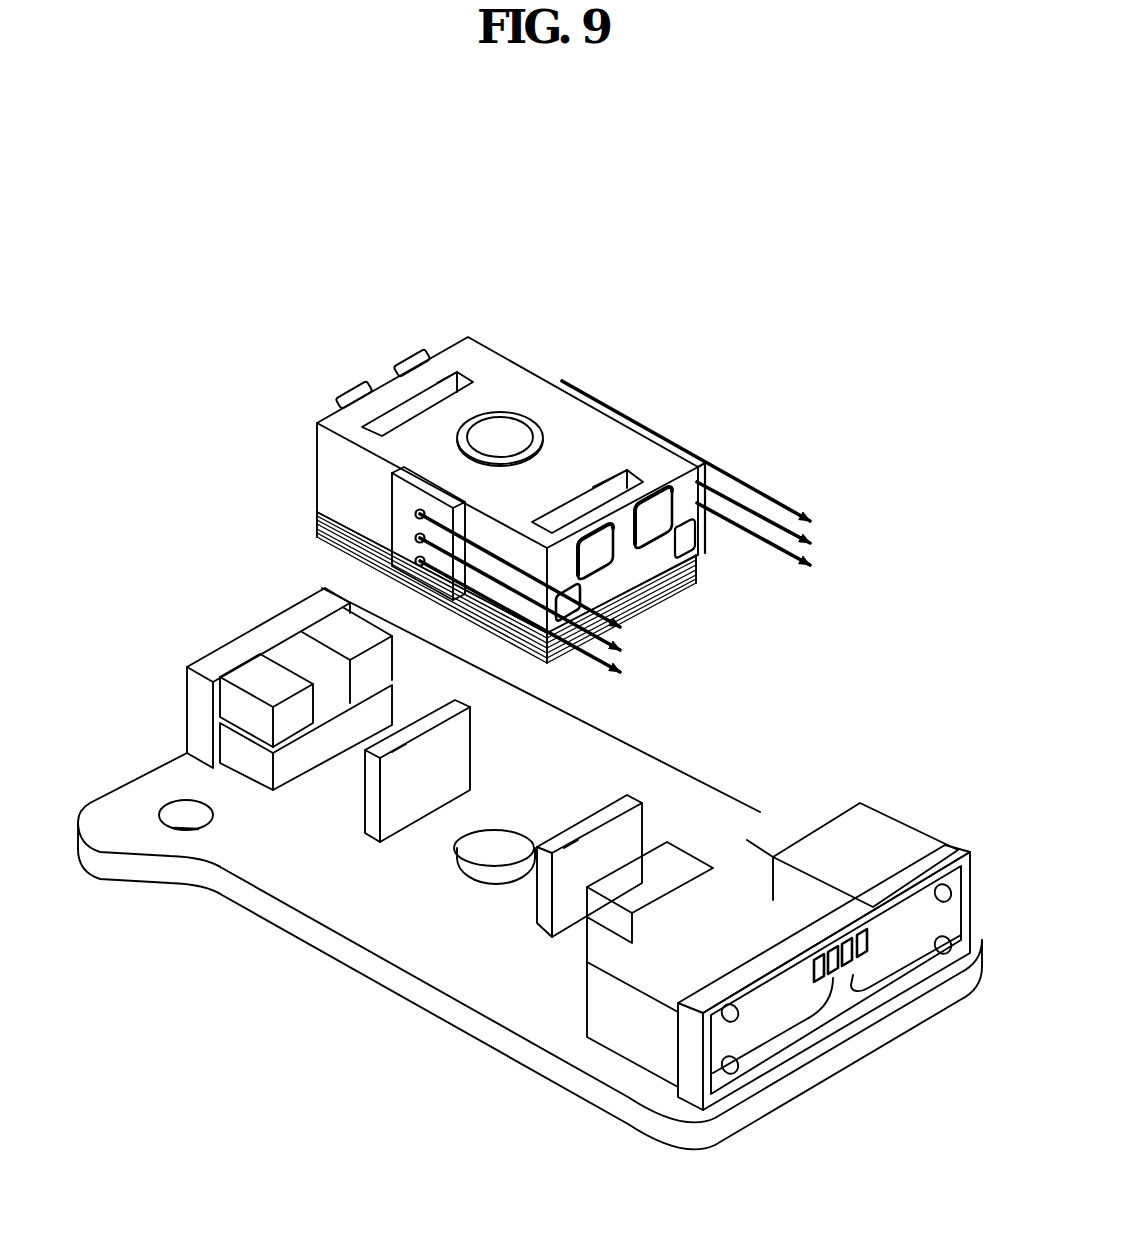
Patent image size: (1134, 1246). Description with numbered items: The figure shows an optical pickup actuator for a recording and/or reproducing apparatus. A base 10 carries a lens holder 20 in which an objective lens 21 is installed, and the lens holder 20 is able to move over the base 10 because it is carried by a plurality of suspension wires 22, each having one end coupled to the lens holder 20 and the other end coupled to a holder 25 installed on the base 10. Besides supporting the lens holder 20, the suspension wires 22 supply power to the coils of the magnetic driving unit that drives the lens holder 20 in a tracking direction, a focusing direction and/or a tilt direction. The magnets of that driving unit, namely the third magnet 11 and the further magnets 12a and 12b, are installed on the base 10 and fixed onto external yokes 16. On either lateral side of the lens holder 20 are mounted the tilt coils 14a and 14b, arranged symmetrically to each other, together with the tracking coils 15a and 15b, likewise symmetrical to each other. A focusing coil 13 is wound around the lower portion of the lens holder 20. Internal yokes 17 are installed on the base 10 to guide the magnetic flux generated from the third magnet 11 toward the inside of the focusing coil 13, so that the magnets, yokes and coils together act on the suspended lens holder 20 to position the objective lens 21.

The base 10 is at (165, 840).
The third magnet 11 is at (235, 749).
The magnet 12a is at (238, 705).
The magnet 12b is at (332, 632).
The focusing coil 13 is at (692, 582).
The tilt coil 14a is at (703, 555).
The tilt coil 14b is at (570, 612).
The tracking coil 15a is at (650, 520).
The tracking coil 15b is at (600, 555).
The external yoke 16 is at (205, 665).
The internal yoke 17 is at (370, 835).
The lens holder 20 is at (510, 375).
The objective lens 21 is at (503, 432).
The suspension wire 22 is at (620, 650).
The holder 25 is at (628, 1043).